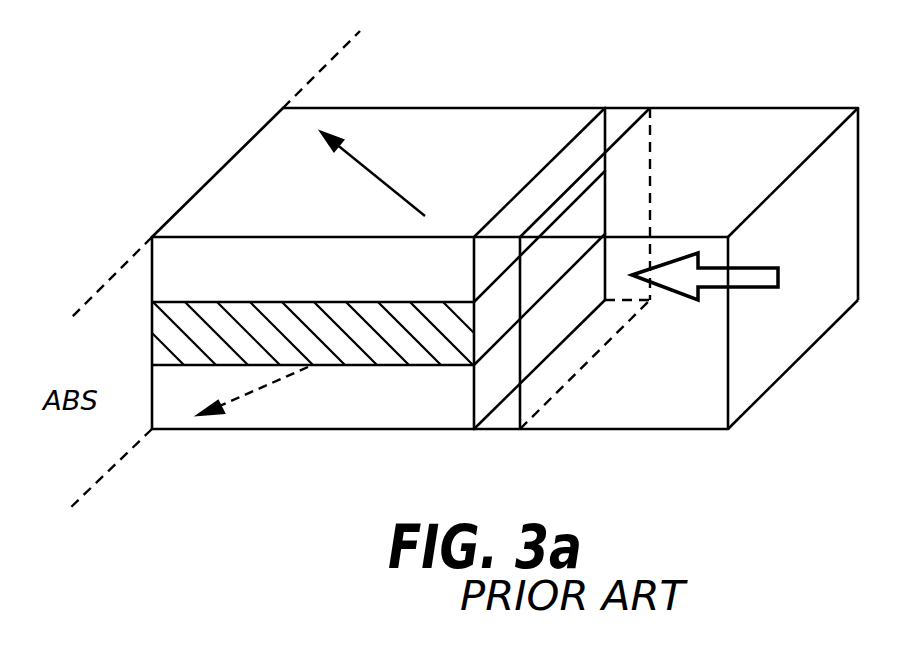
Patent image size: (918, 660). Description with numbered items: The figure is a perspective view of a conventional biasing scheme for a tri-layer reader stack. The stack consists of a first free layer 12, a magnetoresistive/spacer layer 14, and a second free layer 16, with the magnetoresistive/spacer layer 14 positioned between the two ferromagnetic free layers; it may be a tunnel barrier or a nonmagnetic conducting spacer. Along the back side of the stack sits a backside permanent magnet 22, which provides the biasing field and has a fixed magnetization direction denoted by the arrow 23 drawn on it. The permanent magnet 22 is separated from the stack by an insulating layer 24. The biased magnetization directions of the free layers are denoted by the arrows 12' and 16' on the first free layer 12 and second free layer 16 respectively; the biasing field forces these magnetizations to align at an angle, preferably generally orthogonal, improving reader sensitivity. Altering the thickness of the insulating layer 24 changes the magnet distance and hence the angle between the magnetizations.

The first free layer 12 is at (313, 269).
The magnetoresistive/spacer layer 14 is at (328, 351).
The second free layer 16 is at (294, 397).
The magnetization direction of first free layer 12' is at (396, 174).
The magnetization direction of second free layer 16' is at (273, 392).
The backside permanent magnet 22 is at (730, 158).
The fixed magnetization direction arrow 23 is at (718, 292).
The insulating layer 24 is at (618, 118).